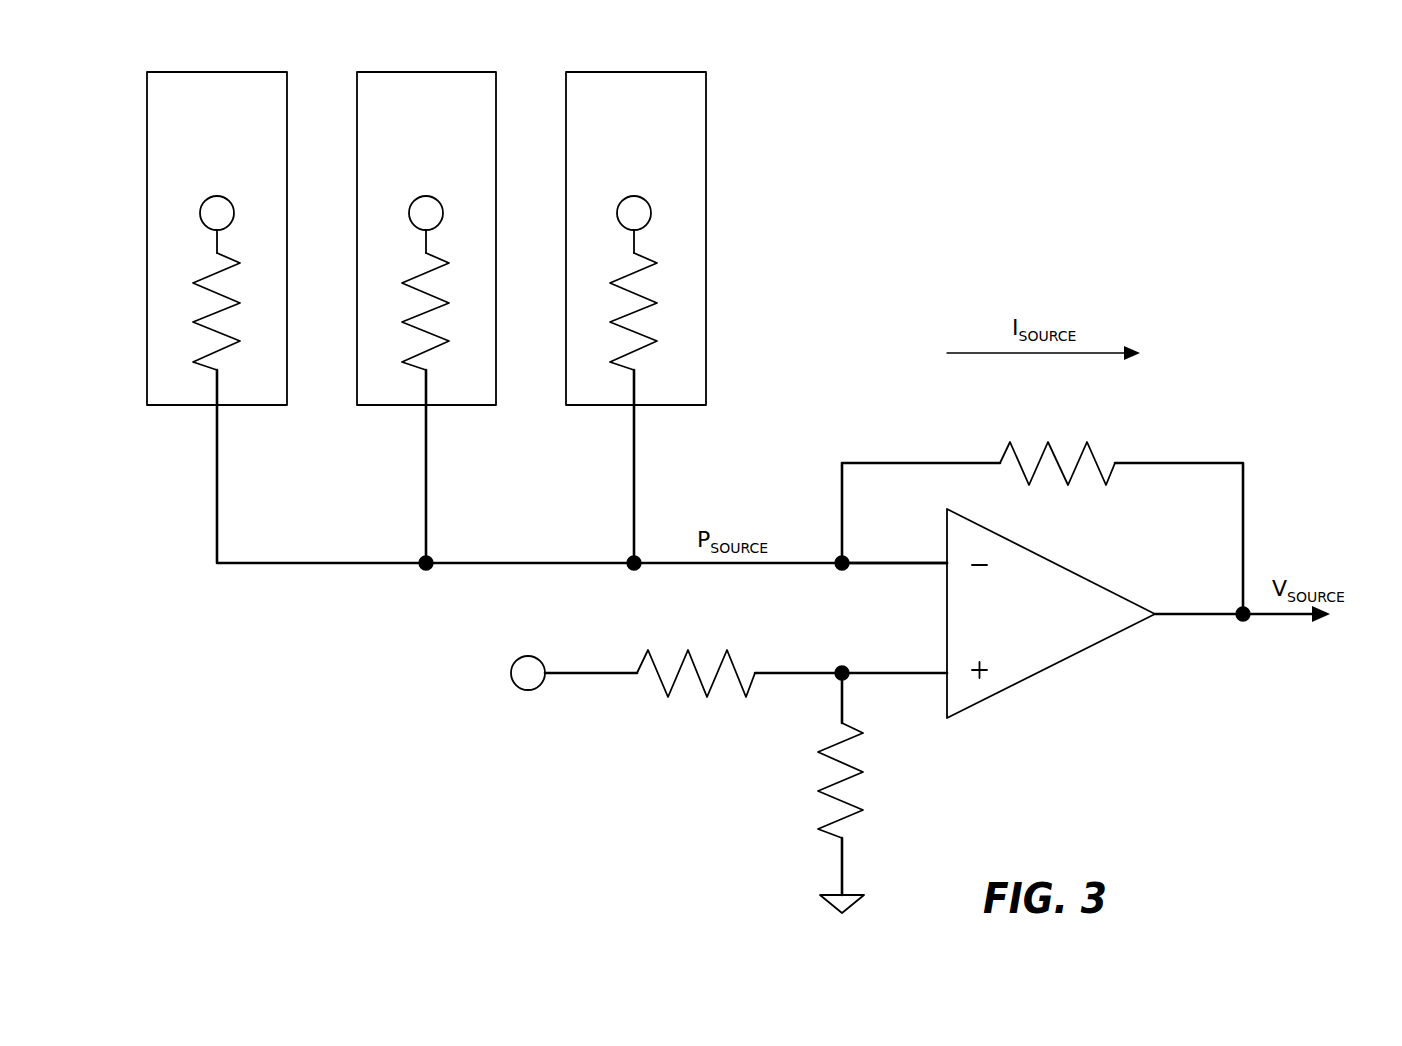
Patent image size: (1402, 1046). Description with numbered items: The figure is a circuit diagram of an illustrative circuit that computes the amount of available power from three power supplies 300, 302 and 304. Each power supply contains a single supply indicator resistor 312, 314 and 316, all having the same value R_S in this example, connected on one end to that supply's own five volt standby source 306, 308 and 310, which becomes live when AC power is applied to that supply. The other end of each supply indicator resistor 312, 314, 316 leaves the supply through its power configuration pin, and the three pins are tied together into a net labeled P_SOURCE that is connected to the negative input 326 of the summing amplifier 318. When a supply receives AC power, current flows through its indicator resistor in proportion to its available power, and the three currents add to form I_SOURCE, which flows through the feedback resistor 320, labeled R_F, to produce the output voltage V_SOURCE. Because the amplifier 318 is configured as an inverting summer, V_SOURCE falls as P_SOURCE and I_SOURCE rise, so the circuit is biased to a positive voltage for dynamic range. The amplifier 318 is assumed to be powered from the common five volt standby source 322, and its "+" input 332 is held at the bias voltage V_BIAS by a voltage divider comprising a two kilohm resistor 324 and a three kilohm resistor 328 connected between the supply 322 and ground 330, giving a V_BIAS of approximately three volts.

The power supply 300 is at (200, 143).
The power supply 302 is at (375, 91).
The power supply 304 is at (583, 91).
The 5V_STBY standby source 306 is at (217, 213).
The 5V_STBY standby source 308 is at (426, 213).
The 5V_STBY standby source 310 is at (634, 213).
The supply indicator resistor 312 is at (200, 367).
The supply indicator resistor 314 is at (408, 367).
The supply indicator resistor 316 is at (617, 367).
The summing amplifier 318 is at (1033, 630).
The feedback resistor 320 is at (1035, 442).
The common 5V_STCOM standby source 322 is at (528, 667).
The resistor 324 is at (703, 702).
The negative input 326 is at (910, 563).
The resistor 328 is at (860, 790).
The ground 330 is at (840, 897).
The "+" input 332 is at (893, 677).